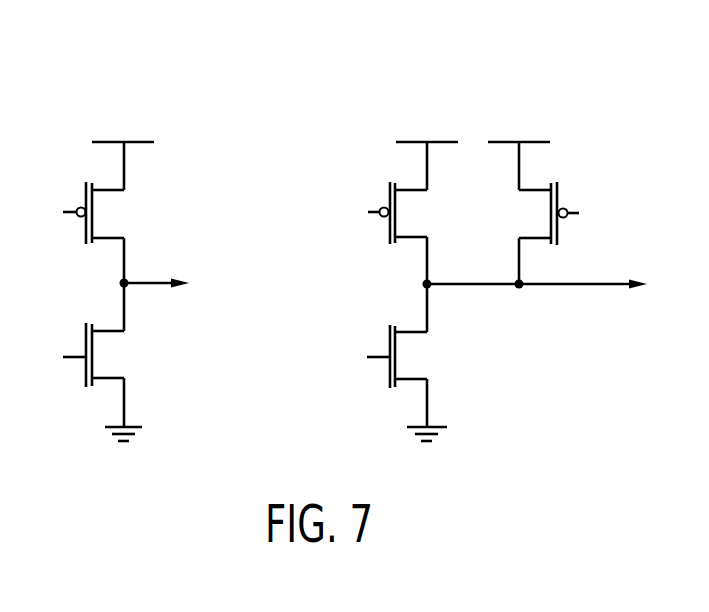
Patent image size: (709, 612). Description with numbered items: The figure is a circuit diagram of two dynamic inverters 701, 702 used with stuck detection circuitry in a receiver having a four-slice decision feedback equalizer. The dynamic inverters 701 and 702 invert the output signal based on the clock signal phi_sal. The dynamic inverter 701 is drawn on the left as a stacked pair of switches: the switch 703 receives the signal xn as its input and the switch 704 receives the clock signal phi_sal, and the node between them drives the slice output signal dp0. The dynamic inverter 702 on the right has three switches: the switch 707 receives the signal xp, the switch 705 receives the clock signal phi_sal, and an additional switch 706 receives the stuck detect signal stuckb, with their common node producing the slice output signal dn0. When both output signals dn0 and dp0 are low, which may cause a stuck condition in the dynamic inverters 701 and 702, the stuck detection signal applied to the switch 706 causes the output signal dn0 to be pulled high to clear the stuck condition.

The dynamic inverter 701 is at (141, 88).
The dynamic inverter 702 is at (484, 88).
The switch 703 is at (113, 210).
The switch 704 is at (110, 355).
The switch 705 is at (415, 358).
The switch 706 is at (535, 214).
The switch 707 is at (413, 215).